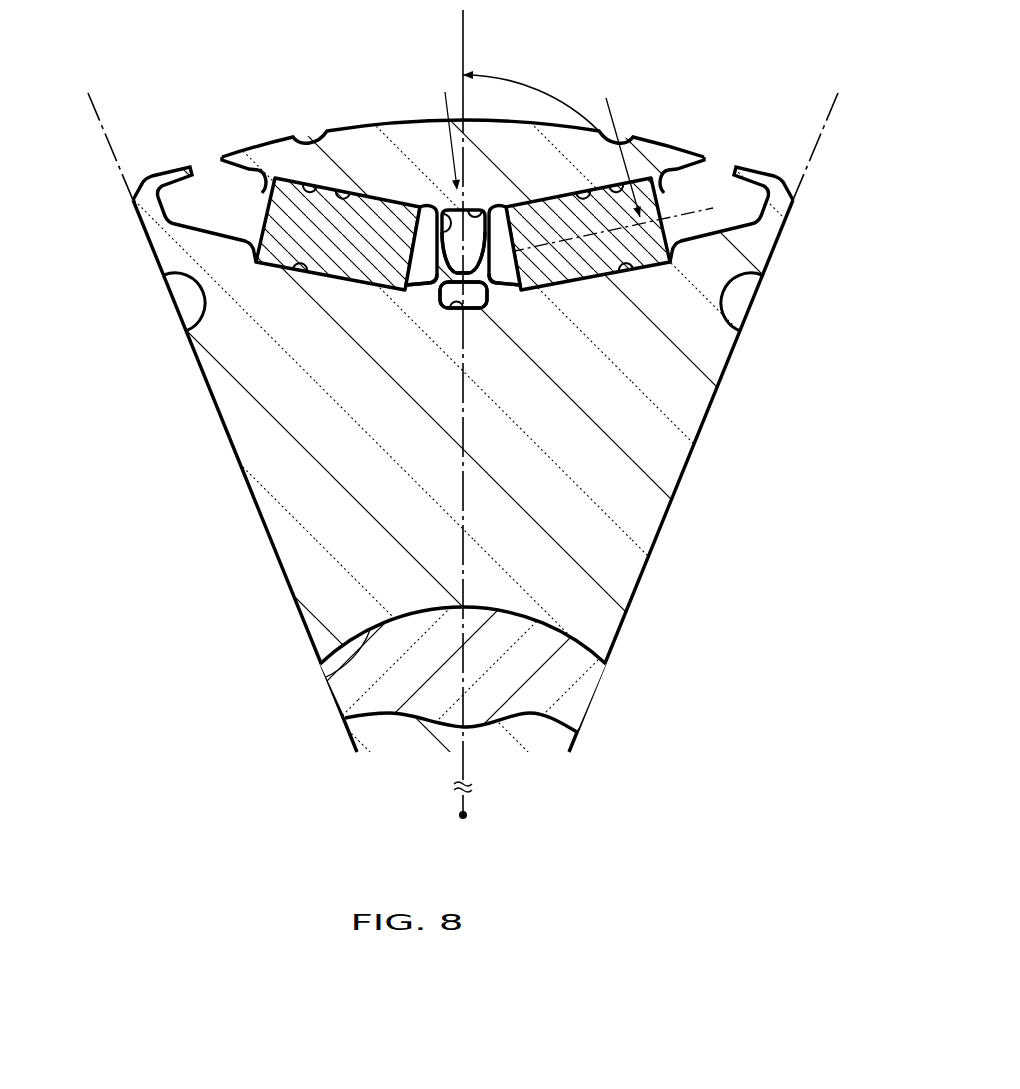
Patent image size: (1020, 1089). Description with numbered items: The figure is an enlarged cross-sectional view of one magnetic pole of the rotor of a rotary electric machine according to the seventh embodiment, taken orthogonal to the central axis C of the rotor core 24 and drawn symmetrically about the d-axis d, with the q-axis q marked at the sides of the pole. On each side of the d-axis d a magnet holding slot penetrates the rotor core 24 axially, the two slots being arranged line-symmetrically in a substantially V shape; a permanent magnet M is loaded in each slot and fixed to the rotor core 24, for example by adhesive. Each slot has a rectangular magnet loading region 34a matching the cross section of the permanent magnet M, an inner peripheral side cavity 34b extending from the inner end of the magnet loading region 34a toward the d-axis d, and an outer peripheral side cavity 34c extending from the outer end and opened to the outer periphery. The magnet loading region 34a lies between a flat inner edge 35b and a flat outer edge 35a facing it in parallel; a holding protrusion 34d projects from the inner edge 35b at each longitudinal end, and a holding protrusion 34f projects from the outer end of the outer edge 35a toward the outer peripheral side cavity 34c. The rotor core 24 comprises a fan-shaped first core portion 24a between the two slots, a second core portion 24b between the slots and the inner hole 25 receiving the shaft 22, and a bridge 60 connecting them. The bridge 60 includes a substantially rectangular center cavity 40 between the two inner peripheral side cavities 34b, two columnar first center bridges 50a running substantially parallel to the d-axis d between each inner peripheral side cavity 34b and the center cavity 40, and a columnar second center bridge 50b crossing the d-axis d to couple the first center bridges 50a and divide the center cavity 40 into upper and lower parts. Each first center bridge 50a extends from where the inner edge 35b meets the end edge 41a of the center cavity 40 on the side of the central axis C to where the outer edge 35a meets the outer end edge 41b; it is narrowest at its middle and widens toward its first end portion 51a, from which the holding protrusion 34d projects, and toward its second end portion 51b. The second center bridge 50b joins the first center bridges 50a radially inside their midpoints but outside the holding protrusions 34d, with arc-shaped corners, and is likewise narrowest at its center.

The shaft 22 is at (568, 687).
The rotor core 24 is at (662, 480).
The fan-shaped outer peripheral region (first core portion) 24a is at (537, 146).
The inner peripheral region (second core portion) 24b is at (387, 488).
The inner hole 25 is at (325, 683).
The magnet loading region 34a is at (353, 182).
The inner peripheral side cavity 34b is at (385, 300).
The outer peripheral side cavity 34c is at (213, 188).
The holding protrusion 34d is at (250, 247).
The holding protrusion 34f is at (252, 150).
The outer edge (outer peripheral side long side) 35a is at (300, 190).
The inner edge (inner peripheral side long side) 35b is at (290, 298).
The center cavity 40 is at (476, 310).
The end edge on the side of the central axis 41a is at (448, 312).
The end edge on the outer peripheral side 41b is at (469, 208).
The first center bridge 50a is at (446, 208).
The second center bridge (coupling element) 50b is at (458, 276).
The first end portion 51a is at (412, 288).
The second end portion 51b is at (426, 206).
The bridge 60 is at (443, 128).
The permanent magnet M is at (348, 262).
The central axis C is at (460, 815).
The d-axis d is at (460, 28).
The q axis q is at (100, 122).